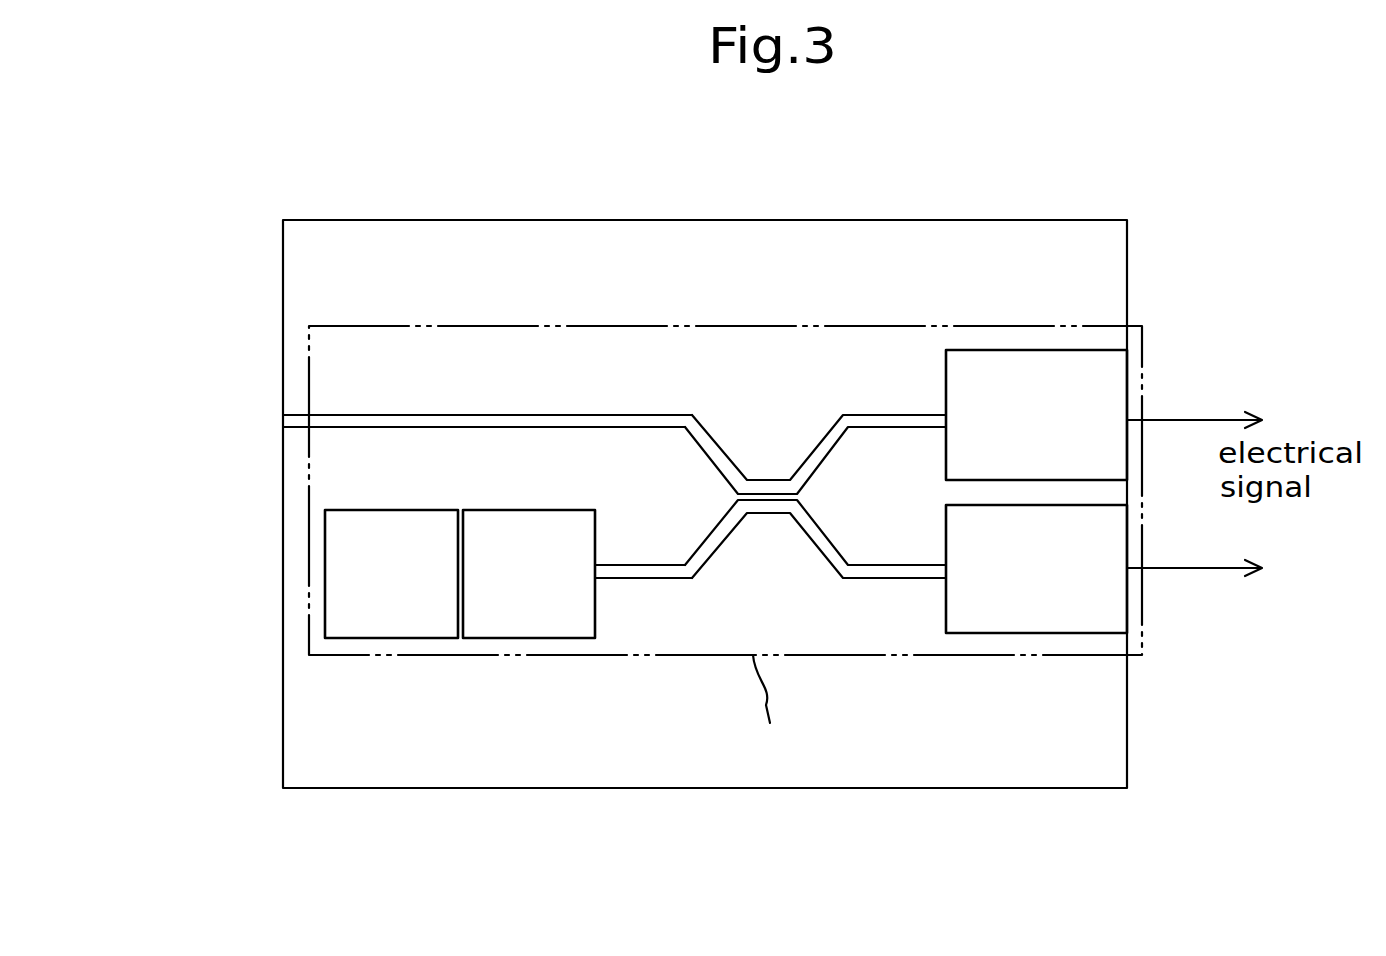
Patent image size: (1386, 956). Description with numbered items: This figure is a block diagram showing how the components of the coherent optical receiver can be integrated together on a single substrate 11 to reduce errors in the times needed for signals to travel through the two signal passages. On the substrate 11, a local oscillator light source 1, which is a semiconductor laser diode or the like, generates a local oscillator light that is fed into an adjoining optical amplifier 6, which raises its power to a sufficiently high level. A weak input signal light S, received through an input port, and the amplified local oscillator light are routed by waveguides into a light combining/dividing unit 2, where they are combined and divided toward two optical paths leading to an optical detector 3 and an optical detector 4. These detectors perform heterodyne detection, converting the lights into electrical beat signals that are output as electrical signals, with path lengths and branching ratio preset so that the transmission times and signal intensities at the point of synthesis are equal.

The local oscillator light source 1 is at (362, 627).
The light combining/dividing unit 2 is at (763, 480).
The optical detector 3 is at (1036, 415).
The optical detector 4 is at (1036, 569).
The optical amplifier 6 is at (523, 628).
The substrate 11 is at (986, 228).
The signal light S is at (283, 420).